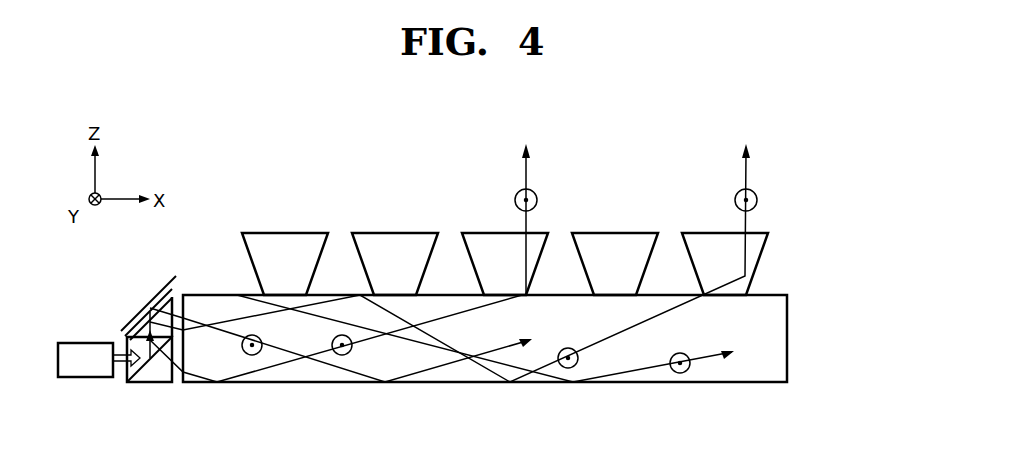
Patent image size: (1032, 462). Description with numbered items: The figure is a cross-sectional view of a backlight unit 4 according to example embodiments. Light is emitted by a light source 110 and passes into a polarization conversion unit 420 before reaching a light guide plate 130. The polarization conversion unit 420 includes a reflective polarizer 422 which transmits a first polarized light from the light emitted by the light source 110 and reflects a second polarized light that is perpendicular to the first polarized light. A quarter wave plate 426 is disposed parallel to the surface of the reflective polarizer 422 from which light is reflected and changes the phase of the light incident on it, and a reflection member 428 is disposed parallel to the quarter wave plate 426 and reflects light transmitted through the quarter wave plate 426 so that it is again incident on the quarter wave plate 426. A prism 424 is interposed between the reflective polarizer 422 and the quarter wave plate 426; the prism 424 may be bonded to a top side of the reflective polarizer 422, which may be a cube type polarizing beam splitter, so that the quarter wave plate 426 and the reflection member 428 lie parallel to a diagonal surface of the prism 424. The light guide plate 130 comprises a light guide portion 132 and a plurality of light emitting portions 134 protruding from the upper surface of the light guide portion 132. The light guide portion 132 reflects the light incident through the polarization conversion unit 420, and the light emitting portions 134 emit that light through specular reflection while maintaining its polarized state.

The backlight unit 4 is at (822, 182).
The light source 110 is at (86, 378).
The polarization conversion unit 420 is at (146, 334).
The reflective polarizer 422 is at (128, 337).
The prism 424 is at (147, 320).
The quarter wave plate 426 is at (189, 263).
The reflection member 428 is at (162, 290).
The light guide plate 130 is at (548, 307).
The light guide portion 132 is at (777, 350).
The light emitting portions 134 is at (550, 264).